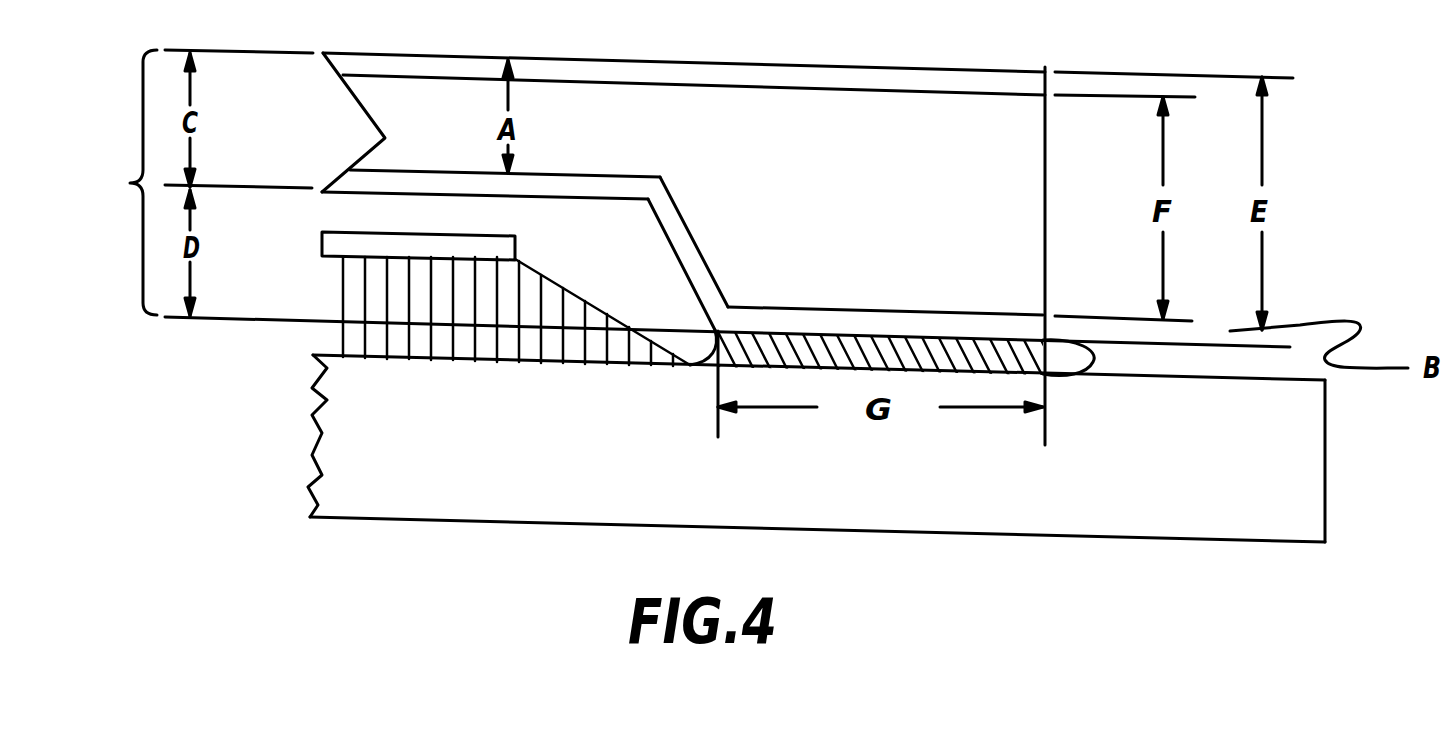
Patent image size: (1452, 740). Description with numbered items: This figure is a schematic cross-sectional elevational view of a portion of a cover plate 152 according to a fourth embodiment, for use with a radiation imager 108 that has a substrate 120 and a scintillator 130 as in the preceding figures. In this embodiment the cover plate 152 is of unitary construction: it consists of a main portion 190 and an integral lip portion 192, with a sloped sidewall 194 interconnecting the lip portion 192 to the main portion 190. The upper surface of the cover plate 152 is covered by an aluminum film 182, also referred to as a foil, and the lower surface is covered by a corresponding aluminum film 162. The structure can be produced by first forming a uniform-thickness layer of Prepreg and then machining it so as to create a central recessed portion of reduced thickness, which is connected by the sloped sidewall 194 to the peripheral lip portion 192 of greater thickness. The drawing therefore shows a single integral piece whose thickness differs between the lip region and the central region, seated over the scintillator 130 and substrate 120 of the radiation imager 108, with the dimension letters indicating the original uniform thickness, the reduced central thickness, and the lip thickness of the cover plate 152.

The radiation imager 108 is at (702, 37).
The substrate 120 is at (310, 415).
The scintillator 130 is at (343, 334).
The cover plate 152 is at (130, 183).
The aluminum film 162 is at (1093, 380).
The aluminum film 182 is at (1059, 227).
The main portion 190 is at (312, 78).
The lip portion 192 is at (312, 193).
The sloped sidewall 194 is at (720, 271).